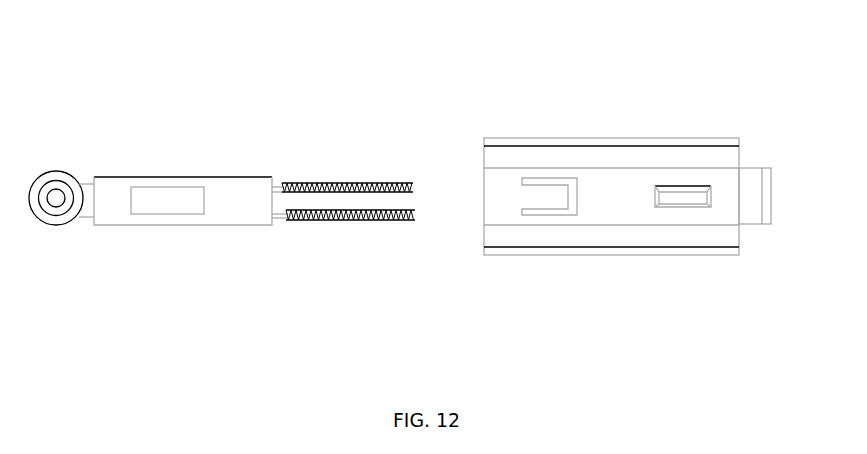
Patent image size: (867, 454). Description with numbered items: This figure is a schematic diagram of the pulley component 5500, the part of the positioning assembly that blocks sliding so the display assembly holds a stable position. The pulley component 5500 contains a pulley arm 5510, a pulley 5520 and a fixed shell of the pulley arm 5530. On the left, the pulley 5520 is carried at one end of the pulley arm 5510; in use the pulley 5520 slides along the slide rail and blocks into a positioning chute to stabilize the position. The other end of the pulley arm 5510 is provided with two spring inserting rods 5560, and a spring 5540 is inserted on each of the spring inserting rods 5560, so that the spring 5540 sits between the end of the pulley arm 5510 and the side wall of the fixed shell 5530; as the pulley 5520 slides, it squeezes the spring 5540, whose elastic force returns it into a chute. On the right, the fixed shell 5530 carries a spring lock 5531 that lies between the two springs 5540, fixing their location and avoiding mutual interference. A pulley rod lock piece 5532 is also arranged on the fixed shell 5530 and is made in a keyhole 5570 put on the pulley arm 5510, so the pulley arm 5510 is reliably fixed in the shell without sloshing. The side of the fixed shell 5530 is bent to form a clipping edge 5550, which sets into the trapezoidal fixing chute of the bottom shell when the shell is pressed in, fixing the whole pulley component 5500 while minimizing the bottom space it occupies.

The pulley component 5500 is at (392, 89).
The pulley arm 5510 is at (233, 182).
The pulley 5520 is at (58, 172).
The fixed shell of the pulley arm 5530 is at (617, 208).
The spring lock 5531 is at (685, 193).
The pulley rod lock piece 5532 is at (552, 200).
The spring 5540 is at (368, 218).
The clipping edge 5550 is at (612, 140).
The spring inserting rods 5560 is at (277, 183).
The keyhole 5570 is at (153, 193).